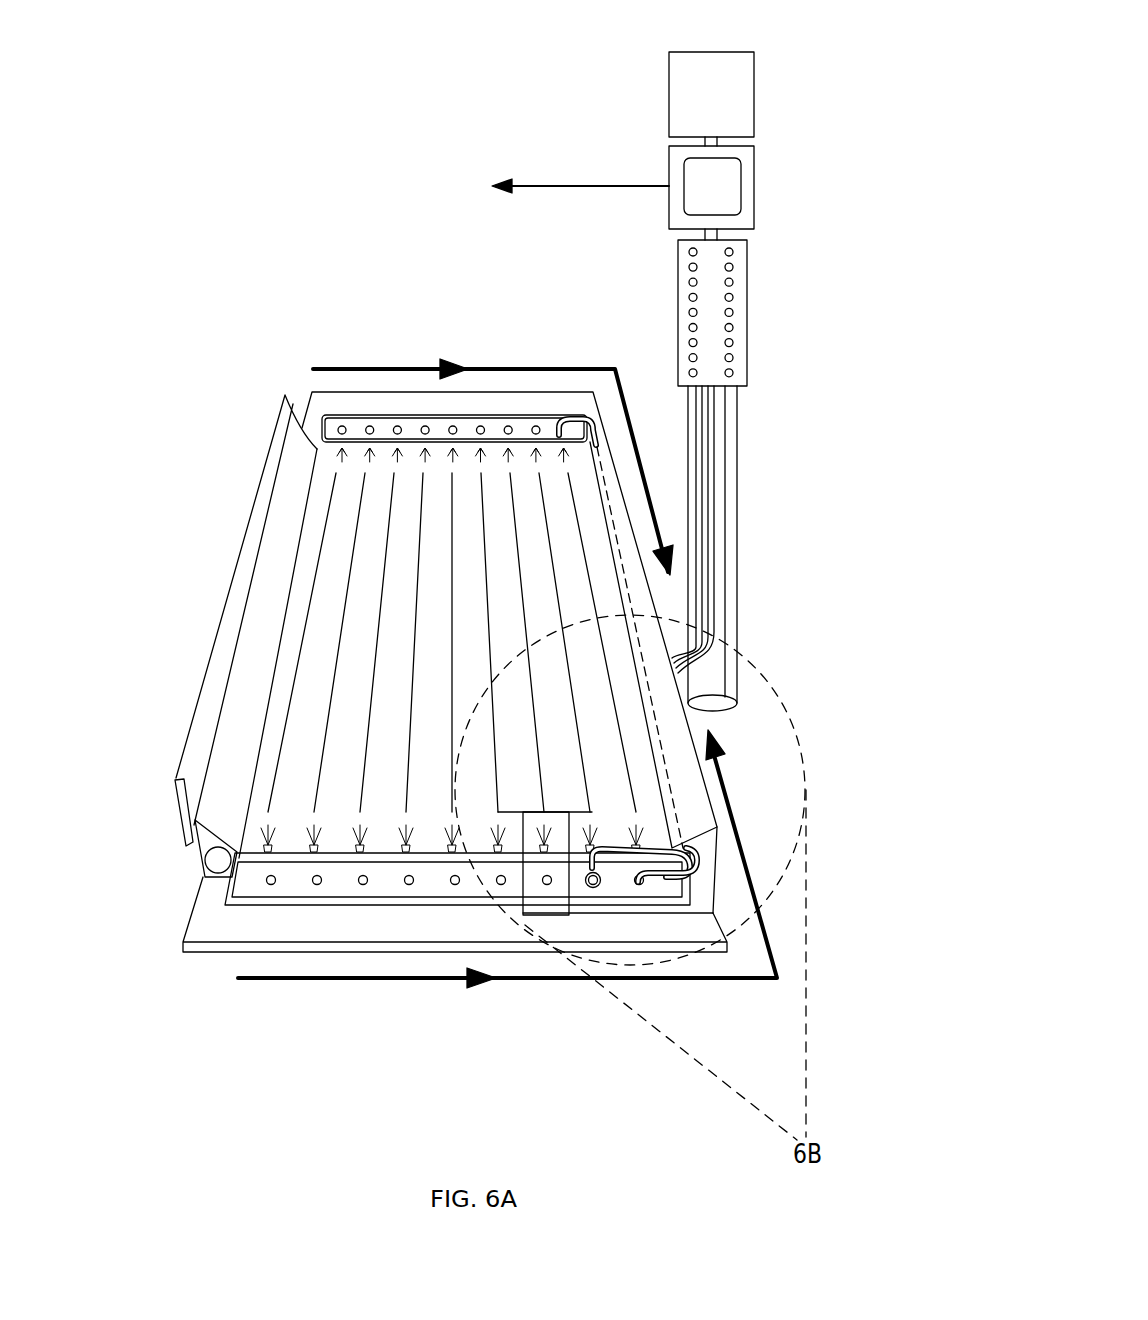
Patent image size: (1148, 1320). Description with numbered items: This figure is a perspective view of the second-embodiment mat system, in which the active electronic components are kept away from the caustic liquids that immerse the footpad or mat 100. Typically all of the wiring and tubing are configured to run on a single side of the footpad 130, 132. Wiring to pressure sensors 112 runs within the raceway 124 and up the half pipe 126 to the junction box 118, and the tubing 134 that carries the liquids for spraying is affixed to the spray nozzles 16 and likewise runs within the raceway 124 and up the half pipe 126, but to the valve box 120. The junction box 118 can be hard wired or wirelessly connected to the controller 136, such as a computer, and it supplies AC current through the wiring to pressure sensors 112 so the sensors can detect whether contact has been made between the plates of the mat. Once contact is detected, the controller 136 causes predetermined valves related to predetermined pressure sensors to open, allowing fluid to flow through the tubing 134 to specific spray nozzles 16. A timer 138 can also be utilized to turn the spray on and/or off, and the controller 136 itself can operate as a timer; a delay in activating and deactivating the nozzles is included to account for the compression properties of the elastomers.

The footpad or mat 100 is at (173, 420).
The wiring to pressure sensors 112 is at (613, 775).
The junction box 118 is at (755, 192).
The valve box 120 is at (733, 297).
The raceway 124 is at (700, 805).
The half pipe 126 is at (738, 495).
The footpad side 130 is at (428, 359).
The footpad side 132 is at (505, 1016).
The tubing 134 is at (682, 653).
The controller 136 is at (608, 143).
The timer 138 is at (755, 100).
The spray nozzles 16 is at (548, 848).